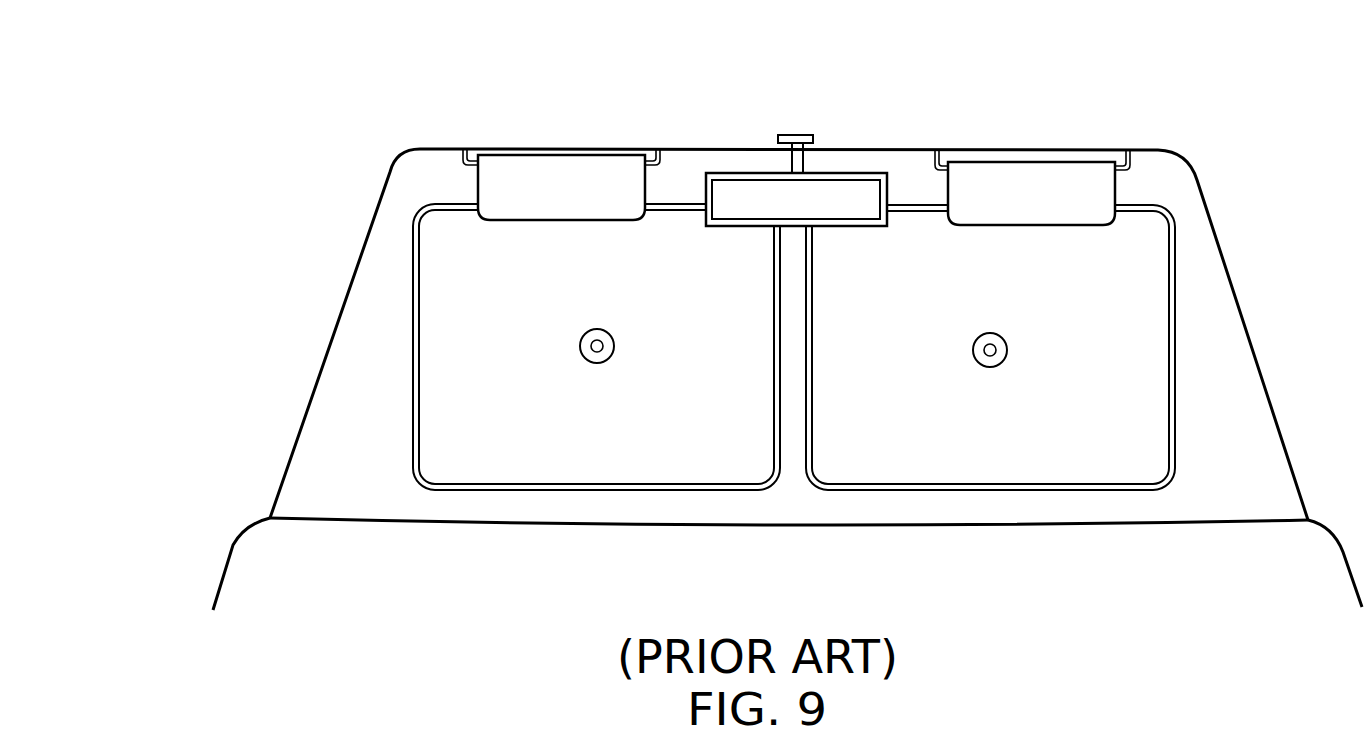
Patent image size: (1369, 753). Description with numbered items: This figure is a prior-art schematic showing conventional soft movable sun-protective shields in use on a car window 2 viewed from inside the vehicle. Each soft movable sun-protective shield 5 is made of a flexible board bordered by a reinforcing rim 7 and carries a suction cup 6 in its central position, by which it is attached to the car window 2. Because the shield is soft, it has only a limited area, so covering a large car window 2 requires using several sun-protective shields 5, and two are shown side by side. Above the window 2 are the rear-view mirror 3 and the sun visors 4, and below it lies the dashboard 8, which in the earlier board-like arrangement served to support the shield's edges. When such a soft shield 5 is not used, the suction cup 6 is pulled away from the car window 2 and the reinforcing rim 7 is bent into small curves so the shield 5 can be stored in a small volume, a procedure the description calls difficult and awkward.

The car window 2 is at (352, 315).
The rear-view mirror 3 is at (833, 205).
The sun visors 4 is at (555, 178).
The soft movable sun-protective shield 5 is at (465, 268).
The suction cup 6 is at (586, 356).
The reinforcing rim 7 is at (415, 378).
The dashboard 8 is at (265, 568).